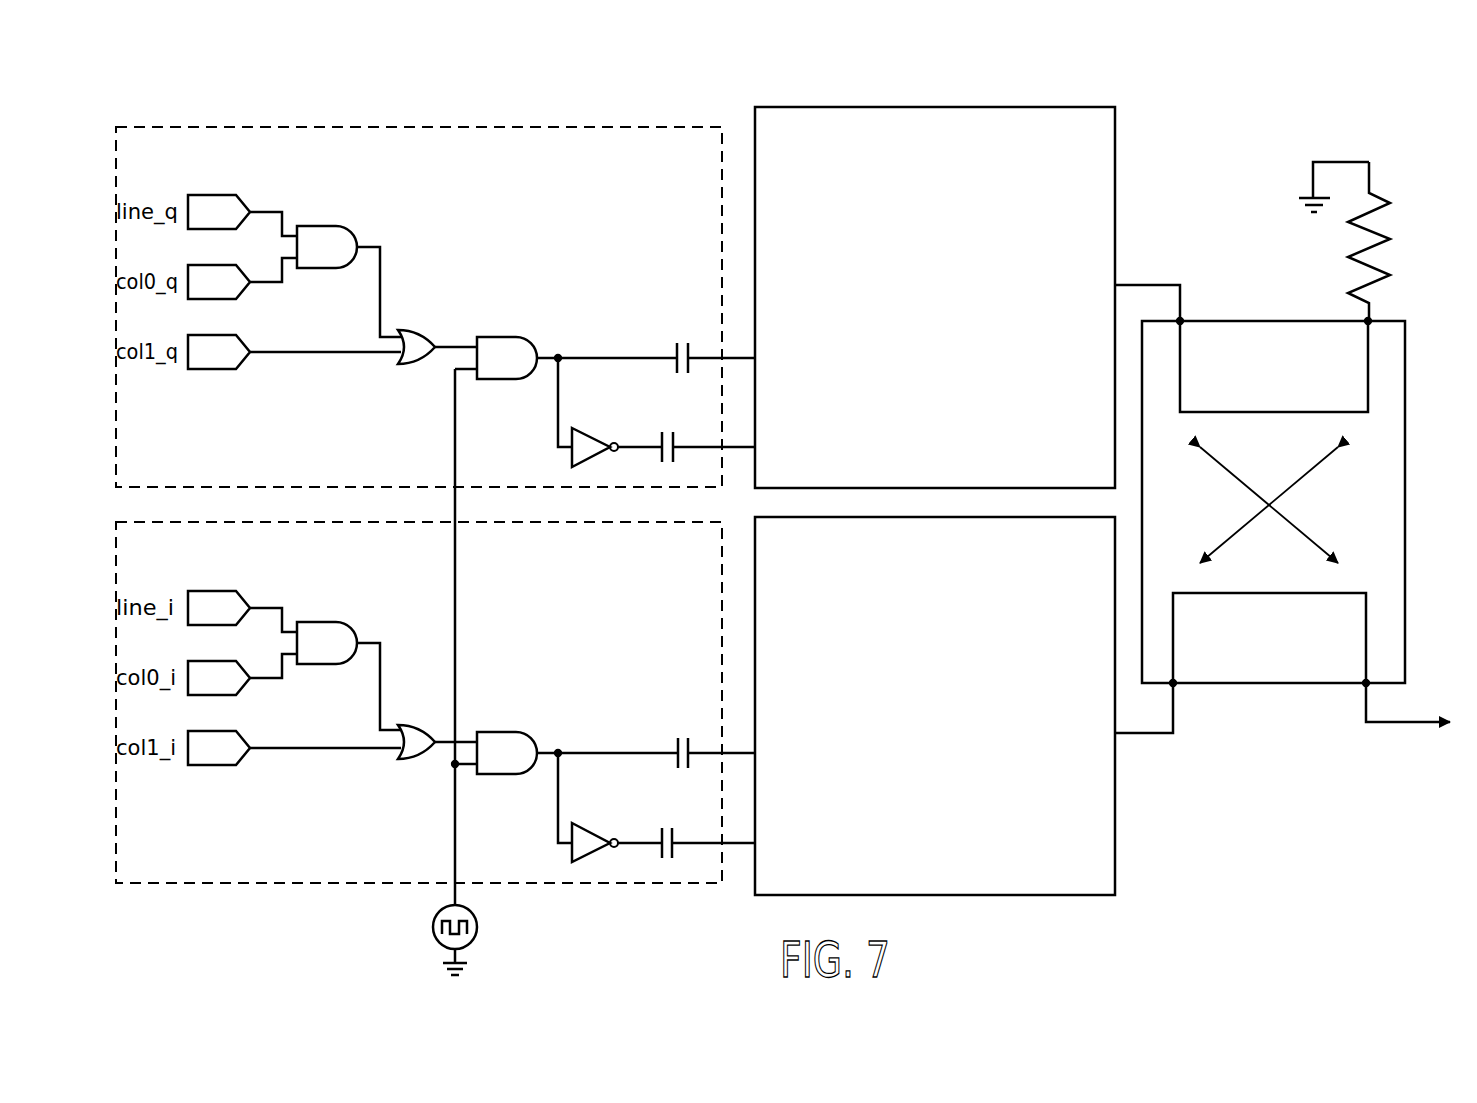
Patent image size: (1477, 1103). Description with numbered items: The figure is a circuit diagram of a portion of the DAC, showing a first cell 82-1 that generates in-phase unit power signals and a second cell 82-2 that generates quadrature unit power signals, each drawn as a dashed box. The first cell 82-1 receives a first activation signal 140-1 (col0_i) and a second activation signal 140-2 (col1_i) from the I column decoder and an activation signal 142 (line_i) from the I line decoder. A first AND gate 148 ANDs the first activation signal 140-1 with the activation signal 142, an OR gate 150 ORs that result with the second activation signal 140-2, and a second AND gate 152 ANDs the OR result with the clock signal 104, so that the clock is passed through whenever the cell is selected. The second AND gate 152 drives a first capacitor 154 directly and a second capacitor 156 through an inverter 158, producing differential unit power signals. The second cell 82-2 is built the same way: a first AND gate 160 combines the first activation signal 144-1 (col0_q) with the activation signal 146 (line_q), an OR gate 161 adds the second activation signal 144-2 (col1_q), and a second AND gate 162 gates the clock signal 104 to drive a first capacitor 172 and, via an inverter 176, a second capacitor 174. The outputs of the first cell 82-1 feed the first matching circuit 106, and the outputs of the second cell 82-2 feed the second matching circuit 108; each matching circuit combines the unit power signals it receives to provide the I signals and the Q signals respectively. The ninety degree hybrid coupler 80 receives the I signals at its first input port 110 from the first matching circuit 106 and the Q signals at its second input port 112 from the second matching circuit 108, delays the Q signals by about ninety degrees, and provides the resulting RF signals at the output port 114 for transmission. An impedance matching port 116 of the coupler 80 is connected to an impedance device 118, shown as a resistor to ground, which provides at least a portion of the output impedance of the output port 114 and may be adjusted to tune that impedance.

The 90 degree hybrid coupler 80 is at (1405, 488).
The first cell 82-1 is at (605, 883).
The second cell 82-2 is at (523, 127).
The clock signal 104 is at (478, 926).
The first matching circuit 106 is at (1055, 895).
The second matching circuit 108 is at (935, 107).
The first input port 110 is at (1184, 696).
The second input port 112 is at (1194, 304).
The output port 114 is at (1359, 691).
The impedance matching port 116 is at (1390, 304).
The impedance device 118 is at (1378, 205).
The first activation signal 140-1 is at (263, 680).
The second activation signal 140-2 is at (338, 751).
The activation signal 142 is at (258, 608).
The first activation signal 144-1 is at (263, 284).
The second activation signal 144-2 is at (338, 356).
The activation signal 146 is at (257, 212).
The first AND gate 148 is at (318, 622).
The OR gate 150 is at (422, 760).
The second AND gate 152 is at (497, 732).
The first capacitor 154 is at (690, 750).
The second capacitor 156 is at (695, 828).
The inverter 158 is at (590, 832).
The first AND gate 160 is at (318, 226).
The OR gate 161 is at (418, 330).
The second AND gate 162 is at (497, 337).
The first capacitor 172 is at (690, 353).
The second capacitor 174 is at (695, 432).
The inverter 176 is at (590, 437).